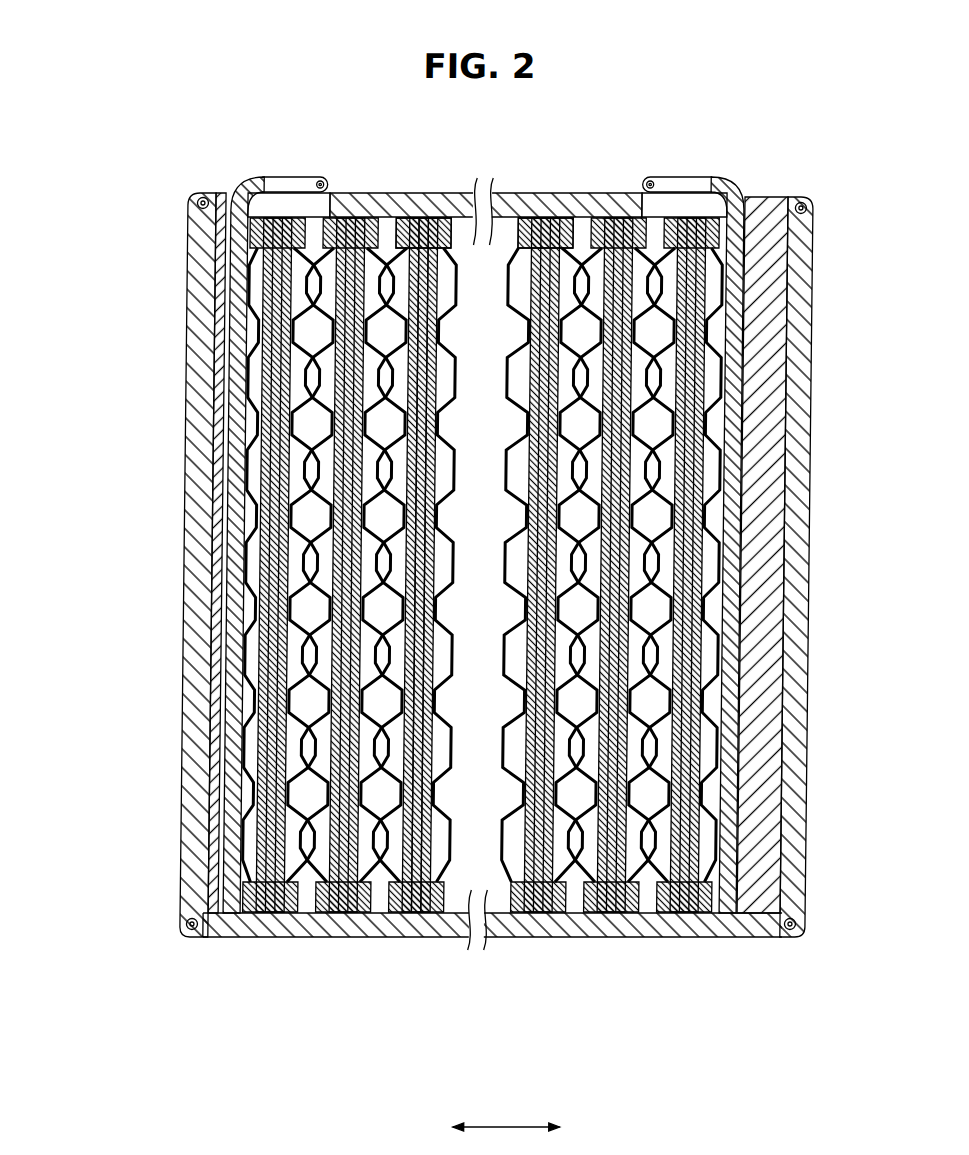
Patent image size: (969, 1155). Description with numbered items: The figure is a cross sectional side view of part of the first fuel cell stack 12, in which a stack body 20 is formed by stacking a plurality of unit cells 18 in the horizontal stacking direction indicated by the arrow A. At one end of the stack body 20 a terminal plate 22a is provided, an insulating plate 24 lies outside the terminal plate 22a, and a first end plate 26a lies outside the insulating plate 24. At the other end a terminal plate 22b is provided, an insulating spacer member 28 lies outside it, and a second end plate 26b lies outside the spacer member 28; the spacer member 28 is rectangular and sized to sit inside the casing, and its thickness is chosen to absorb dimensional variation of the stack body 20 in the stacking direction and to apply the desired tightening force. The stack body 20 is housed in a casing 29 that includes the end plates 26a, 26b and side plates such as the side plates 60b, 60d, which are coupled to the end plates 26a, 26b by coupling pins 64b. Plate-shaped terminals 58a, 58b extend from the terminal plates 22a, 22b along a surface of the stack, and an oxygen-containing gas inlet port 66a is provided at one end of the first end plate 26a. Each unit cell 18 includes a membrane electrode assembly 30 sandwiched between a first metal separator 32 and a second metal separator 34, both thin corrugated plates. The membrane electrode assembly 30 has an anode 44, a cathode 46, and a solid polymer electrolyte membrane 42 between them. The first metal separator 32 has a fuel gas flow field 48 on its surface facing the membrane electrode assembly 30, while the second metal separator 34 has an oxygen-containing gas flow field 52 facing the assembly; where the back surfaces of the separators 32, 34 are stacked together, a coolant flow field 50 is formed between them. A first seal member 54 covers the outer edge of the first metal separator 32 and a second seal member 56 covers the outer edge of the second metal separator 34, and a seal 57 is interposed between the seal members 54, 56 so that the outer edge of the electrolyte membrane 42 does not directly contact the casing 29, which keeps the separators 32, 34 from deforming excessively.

The first fuel cell stack 12 is at (659, 112).
The unit cell 18 is at (386, 597).
The stack body 20 is at (385, 617).
The terminal plate 22a is at (217, 304).
The terminal plate 22b is at (736, 300).
The insulating plate 24 is at (208, 337).
The first end plate 26a is at (186, 272).
The second end plate 26b is at (815, 270).
The insulating spacer member 28 is at (766, 388).
The casing 29 is at (486, 184).
The membrane electrode assembly 30 is at (516, 634).
The first metal separator 32 is at (605, 915).
The second metal separator 34 is at (633, 915).
The solid polymer electrolyte membrane 42 is at (425, 917).
The anode 44 is at (396, 917).
The cathode 46 is at (450, 917).
The fuel gas flow field 48 is at (261, 476).
The coolant flow field 50 is at (315, 605).
The oxygen-containing gas flow field 52 is at (303, 468).
The first seal member 54 is at (393, 232).
The second seal member 56 is at (452, 232).
The seal 57 is at (356, 194).
The plate-shaped terminal 58a is at (320, 177).
The plate-shaped terminal 58b is at (654, 180).
The side plate 60b is at (623, 193).
The side plate 60d is at (303, 937).
The coupling pin 64b is at (204, 197).
The oxygen-containing gas inlet port 66a is at (194, 207).